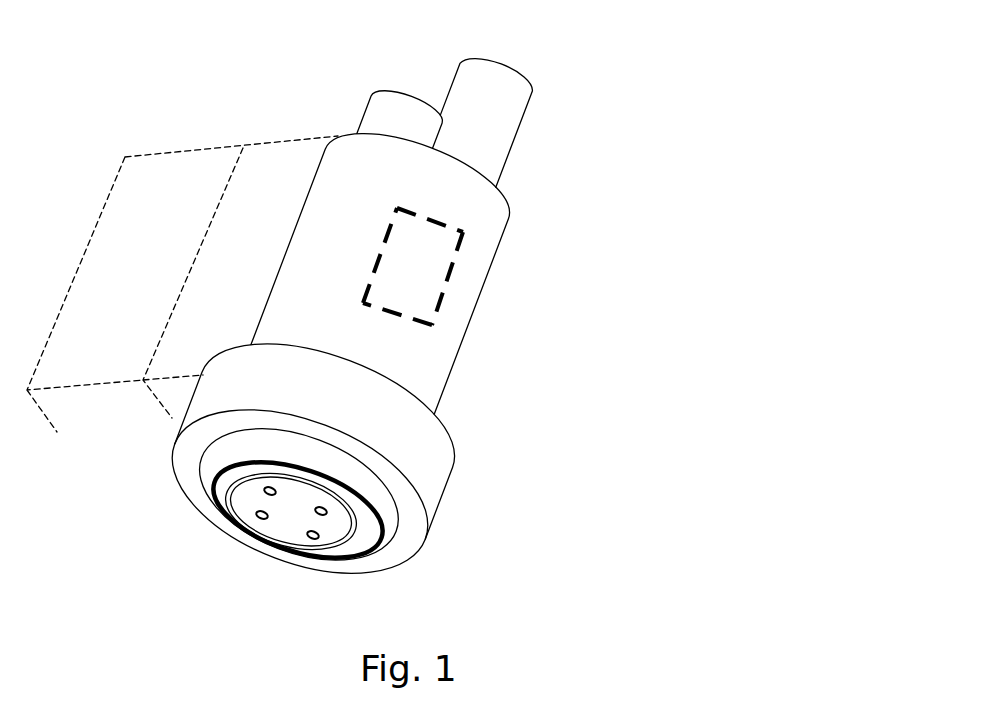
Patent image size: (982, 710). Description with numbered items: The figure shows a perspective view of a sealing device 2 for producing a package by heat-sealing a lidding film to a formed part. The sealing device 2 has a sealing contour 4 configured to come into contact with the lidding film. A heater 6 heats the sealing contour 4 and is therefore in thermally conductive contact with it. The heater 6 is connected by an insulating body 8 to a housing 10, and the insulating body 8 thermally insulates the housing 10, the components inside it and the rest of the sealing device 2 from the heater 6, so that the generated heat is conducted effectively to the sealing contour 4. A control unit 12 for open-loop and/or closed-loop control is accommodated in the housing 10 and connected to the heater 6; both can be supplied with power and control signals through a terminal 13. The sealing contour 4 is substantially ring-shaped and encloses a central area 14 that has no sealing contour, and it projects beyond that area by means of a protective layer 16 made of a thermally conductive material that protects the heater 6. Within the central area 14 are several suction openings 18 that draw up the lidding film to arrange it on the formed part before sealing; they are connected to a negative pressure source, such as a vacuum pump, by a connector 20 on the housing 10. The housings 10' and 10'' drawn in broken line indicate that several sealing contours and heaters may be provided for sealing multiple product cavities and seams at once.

The sealing device 2 is at (101, 80).
The sealing contour 4 is at (236, 563).
The heater 6 is at (388, 493).
The insulating body 8 is at (433, 473).
The housing 10 is at (415, 263).
The housing 10' is at (182, 240).
The housing 10'' is at (216, 226).
The control unit 12 is at (423, 261).
The terminal 13 is at (407, 100).
The central area 14 is at (270, 508).
The protective layer 16 is at (313, 558).
The suction opening 18 is at (313, 535).
The connector 20 is at (485, 143).